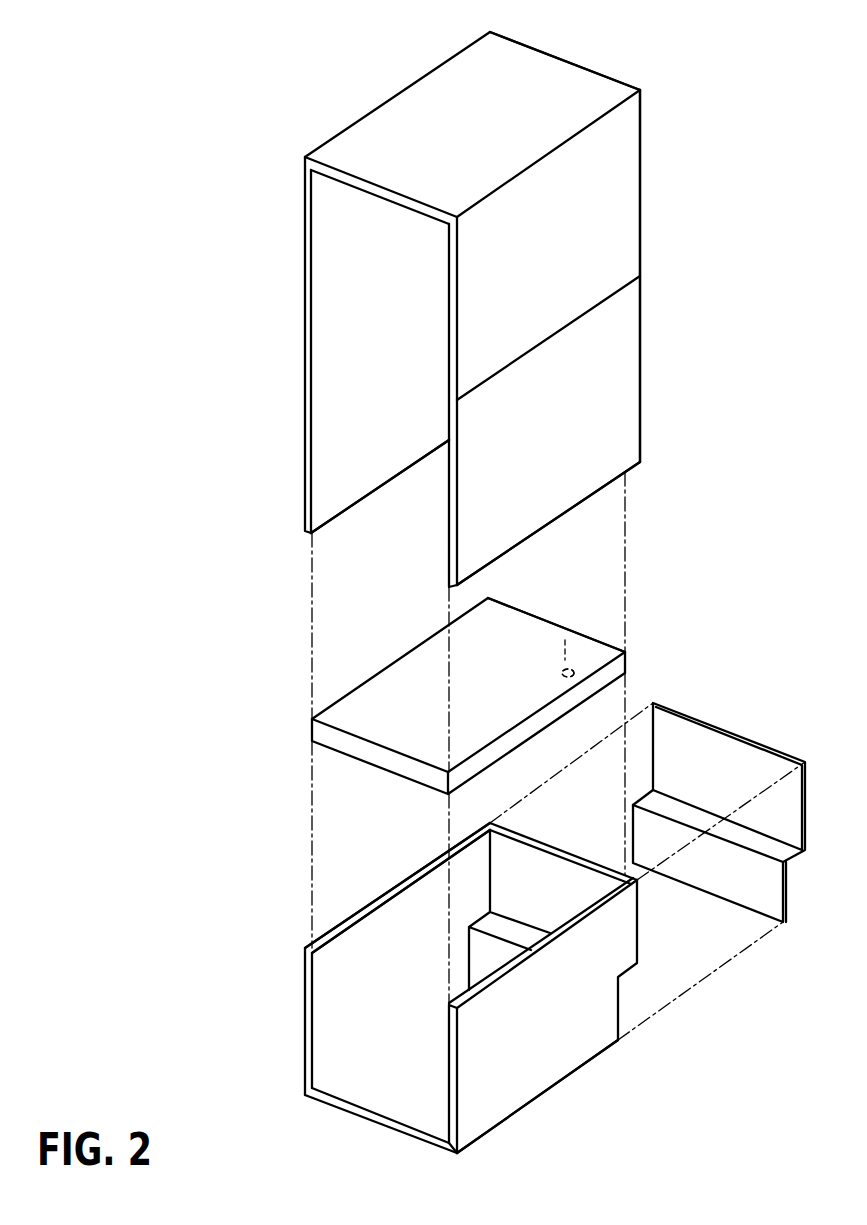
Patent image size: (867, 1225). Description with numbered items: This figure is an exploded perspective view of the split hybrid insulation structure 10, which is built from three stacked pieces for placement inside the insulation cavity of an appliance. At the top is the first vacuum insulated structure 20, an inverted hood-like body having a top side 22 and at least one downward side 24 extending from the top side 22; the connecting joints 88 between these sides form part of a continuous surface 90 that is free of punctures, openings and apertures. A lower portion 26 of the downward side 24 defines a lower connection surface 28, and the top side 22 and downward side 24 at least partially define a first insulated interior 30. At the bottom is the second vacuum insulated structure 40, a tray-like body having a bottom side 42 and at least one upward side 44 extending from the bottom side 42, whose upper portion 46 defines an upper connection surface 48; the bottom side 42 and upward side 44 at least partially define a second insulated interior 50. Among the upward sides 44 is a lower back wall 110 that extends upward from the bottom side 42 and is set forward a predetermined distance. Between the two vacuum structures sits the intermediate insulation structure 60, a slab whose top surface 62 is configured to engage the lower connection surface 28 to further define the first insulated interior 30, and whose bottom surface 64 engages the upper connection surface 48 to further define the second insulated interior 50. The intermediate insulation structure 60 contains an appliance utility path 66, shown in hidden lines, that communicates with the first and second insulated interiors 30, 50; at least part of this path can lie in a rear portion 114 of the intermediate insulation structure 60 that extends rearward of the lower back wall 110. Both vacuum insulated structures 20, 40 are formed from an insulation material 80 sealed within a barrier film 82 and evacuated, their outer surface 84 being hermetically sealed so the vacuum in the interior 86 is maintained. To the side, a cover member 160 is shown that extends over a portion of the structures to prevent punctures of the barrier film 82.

The split hybrid insulation structure 10 is at (205, 557).
The first vacuum insulated structure 20 is at (475, 327).
The top side 22 is at (540, 90).
The downward side 24 is at (520, 309).
The lower portion 26 is at (657, 443).
The lower connection surface 28 is at (613, 483).
The first insulated interior 30 is at (350, 514).
The second vacuum insulated structure 40 is at (407, 979).
The bottom side 42 is at (380, 1092).
The upward side 44 is at (543, 1017).
The upper portion 46 is at (336, 959).
The upper connection surface 48 is at (370, 900).
The second insulated interior 50 is at (347, 1022).
The intermediate insulation structure 60 is at (459, 687).
The top surface 62 is at (491, 685).
The bottom surface 64 is at (365, 767).
The appliance utility path 66 is at (587, 660).
The insulation material 80 is at (613, 222).
The barrier film 82 is at (323, 396).
The outer surface 84 is at (526, 306).
The interior 86 is at (376, 286).
The connecting joint 88 is at (595, 122).
The continuous surface 90 is at (539, 1014).
The lower back wall 110 is at (550, 867).
The rear portion 114 is at (512, 597).
The cover member 160 is at (742, 730).